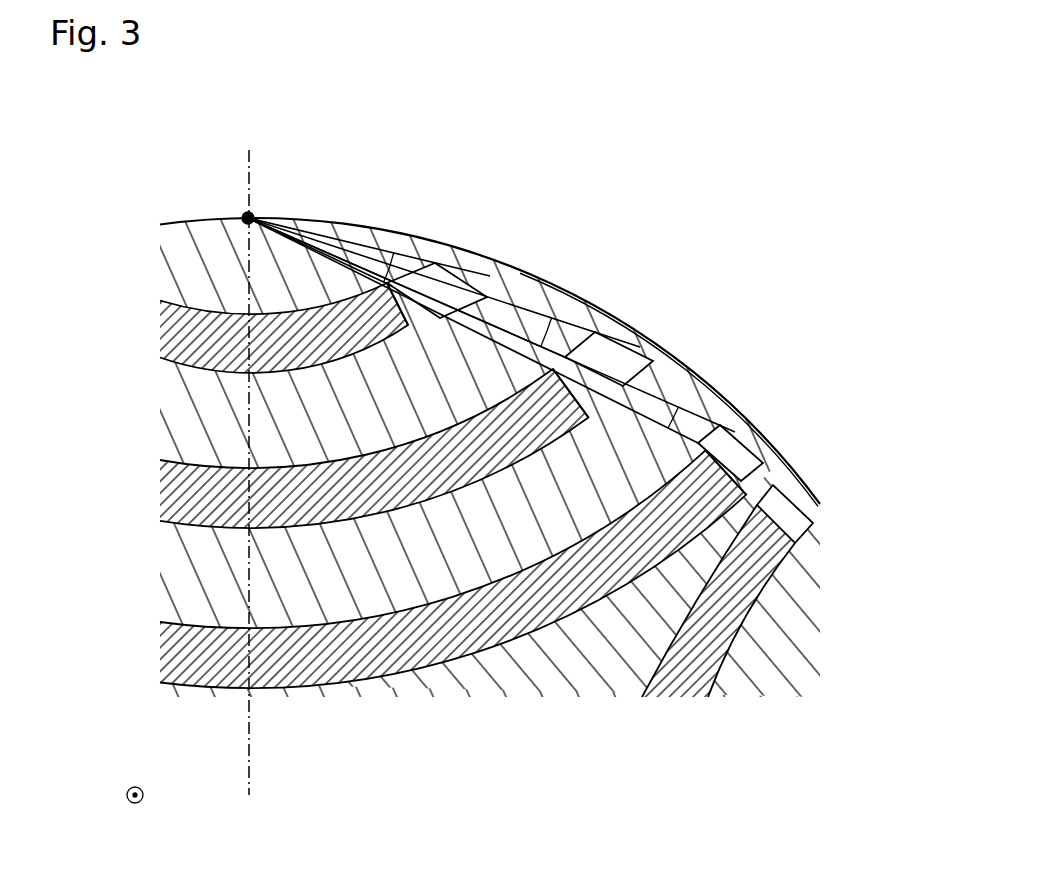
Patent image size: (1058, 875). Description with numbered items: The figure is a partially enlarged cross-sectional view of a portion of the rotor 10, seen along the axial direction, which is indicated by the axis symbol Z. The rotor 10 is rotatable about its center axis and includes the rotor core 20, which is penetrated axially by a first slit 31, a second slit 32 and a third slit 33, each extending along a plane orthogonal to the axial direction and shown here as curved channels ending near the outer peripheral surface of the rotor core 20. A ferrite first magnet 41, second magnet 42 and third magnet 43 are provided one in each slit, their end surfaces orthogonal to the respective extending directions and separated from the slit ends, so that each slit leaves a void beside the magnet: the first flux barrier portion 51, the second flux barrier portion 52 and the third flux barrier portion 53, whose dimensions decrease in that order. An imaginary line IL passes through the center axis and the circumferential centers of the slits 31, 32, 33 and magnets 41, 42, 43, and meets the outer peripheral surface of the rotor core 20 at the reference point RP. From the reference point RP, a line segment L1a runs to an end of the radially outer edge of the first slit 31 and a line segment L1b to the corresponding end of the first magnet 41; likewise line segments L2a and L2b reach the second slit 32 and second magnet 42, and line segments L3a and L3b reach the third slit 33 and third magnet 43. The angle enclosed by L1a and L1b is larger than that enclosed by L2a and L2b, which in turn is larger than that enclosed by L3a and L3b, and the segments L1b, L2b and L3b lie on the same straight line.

The rotor 10 is at (647, 167).
The rotor core 20 is at (524, 270).
The first slit 31 is at (444, 258).
The second slit 32 is at (645, 350).
The third slit 33 is at (744, 446).
The first magnet 41 is at (199, 302).
The second magnet 42 is at (217, 497).
The third magnet 43 is at (429, 650).
The first flux barrier portion 51 is at (418, 335).
The second flux barrier portion 52 is at (588, 394).
The third flux barrier portion 53 is at (731, 478).
The reference point RP is at (256, 214).
The imaginary line IL is at (248, 155).
The line segment L1a is at (470, 270).
The line segment L1b is at (385, 285).
The line segment L2a is at (548, 318).
The line segment L2b is at (560, 362).
The line segment L3a is at (700, 400).
The line segment L3b is at (688, 440).
The Z axis Z is at (146, 806).